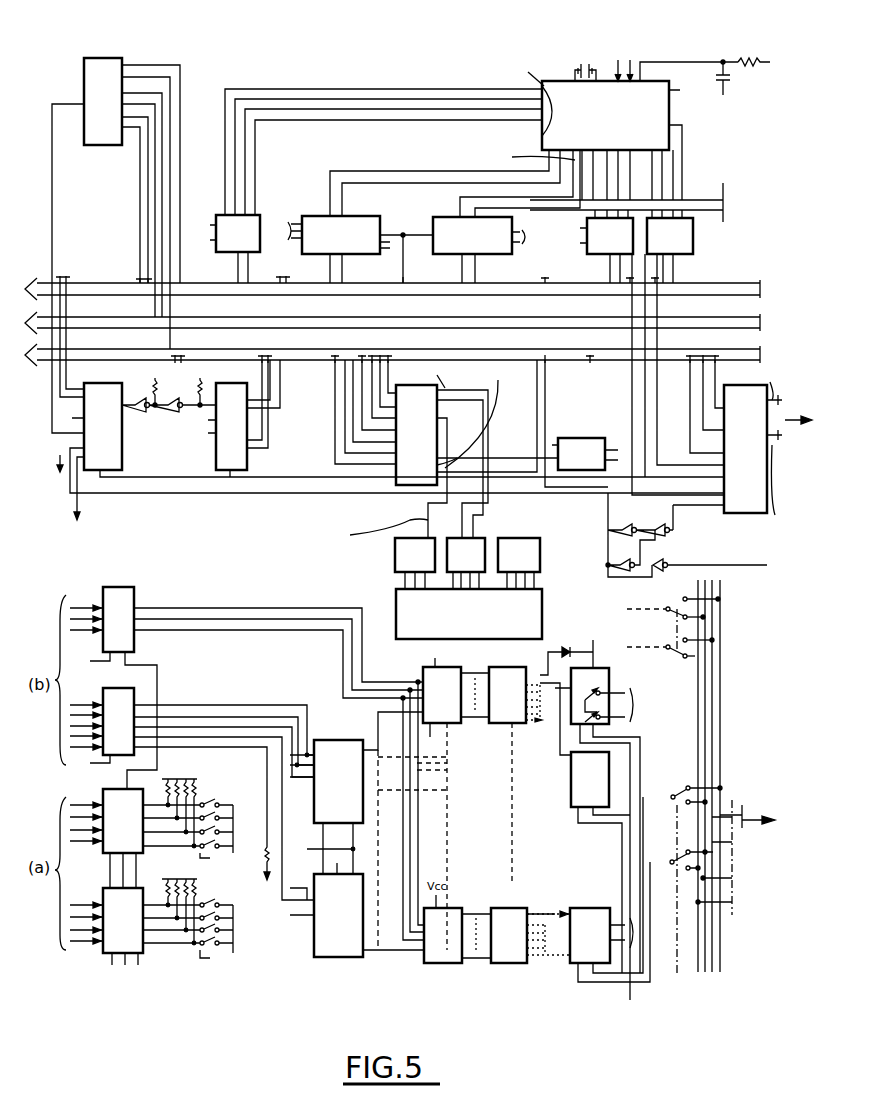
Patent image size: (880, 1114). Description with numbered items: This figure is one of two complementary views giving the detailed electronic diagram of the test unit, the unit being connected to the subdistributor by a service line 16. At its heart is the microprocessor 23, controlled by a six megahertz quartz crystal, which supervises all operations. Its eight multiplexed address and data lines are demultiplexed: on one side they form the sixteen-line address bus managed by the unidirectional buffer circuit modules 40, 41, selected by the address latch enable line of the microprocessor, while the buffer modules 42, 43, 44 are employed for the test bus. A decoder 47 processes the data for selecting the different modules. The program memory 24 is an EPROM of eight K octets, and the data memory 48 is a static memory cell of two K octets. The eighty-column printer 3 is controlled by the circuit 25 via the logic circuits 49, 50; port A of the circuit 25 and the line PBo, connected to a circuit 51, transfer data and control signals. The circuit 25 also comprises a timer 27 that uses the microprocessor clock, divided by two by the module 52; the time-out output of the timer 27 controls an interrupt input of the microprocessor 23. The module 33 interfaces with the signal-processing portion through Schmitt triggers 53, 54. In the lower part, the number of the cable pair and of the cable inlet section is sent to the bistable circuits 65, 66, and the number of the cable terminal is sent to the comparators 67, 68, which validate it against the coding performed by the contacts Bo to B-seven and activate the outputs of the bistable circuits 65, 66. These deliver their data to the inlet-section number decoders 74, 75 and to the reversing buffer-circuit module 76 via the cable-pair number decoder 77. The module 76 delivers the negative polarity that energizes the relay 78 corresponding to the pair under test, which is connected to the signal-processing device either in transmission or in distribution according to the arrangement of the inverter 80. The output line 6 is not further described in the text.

The printer 3 is at (405, 610).
The output line 6 is at (72, 500).
The service line 16 is at (751, 809).
The microprocessor 23 is at (563, 97).
The program memory 24 is at (232, 472).
The Intel 8155 circuit 25 is at (410, 475).
The timer 27 is at (450, 462).
The type-8255 A module 33 is at (730, 448).
The unidirectional buffer circuit module 40 is at (320, 228).
The unidirectional buffer circuit module 41 is at (452, 245).
The buffer module 42 is at (224, 226).
The buffer module 43 is at (602, 248).
The buffer module 44 is at (685, 250).
The decoder 47 is at (110, 440).
The data memory 48 is at (92, 70).
The Intel 74 LS08 circuit 49 is at (470, 548).
The Intel 74 LS08 circuit 50 is at (530, 552).
The circuit 51 is at (400, 552).
The module 52 is at (578, 440).
The Schmitt trigger 53 is at (794, 409).
The Schmitt trigger 54 is at (791, 437).
The bistable circuit 65 is at (125, 597).
The bistable circuit 66 is at (125, 705).
The comparator 67 is at (110, 800).
The comparator 68 is at (110, 945).
The inlet-section number decoder 74 is at (336, 760).
The inlet-section number decoder 75 is at (325, 935).
The reversing buffer-circuit module 76 is at (510, 725).
The cable-pair number decoder 77 is at (447, 705).
The relay 78 is at (608, 672).
The inverter 80 is at (680, 790).